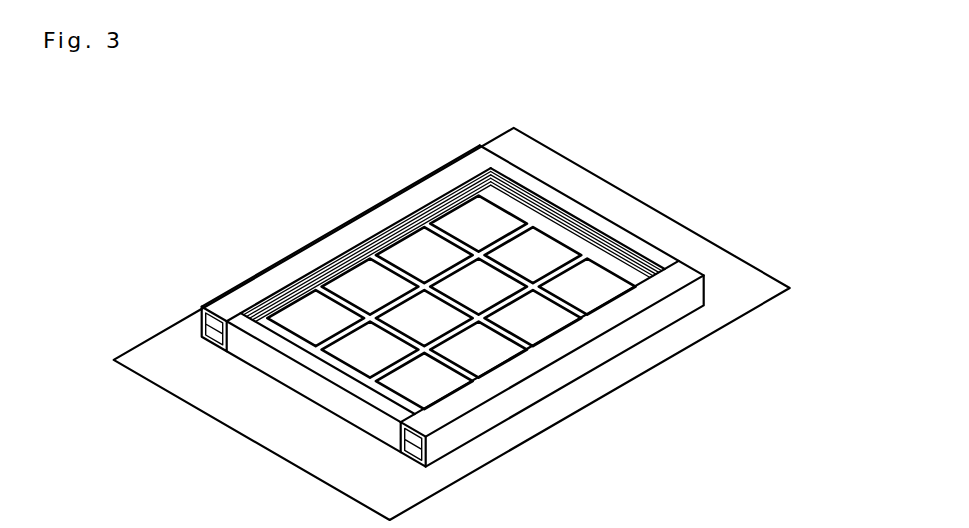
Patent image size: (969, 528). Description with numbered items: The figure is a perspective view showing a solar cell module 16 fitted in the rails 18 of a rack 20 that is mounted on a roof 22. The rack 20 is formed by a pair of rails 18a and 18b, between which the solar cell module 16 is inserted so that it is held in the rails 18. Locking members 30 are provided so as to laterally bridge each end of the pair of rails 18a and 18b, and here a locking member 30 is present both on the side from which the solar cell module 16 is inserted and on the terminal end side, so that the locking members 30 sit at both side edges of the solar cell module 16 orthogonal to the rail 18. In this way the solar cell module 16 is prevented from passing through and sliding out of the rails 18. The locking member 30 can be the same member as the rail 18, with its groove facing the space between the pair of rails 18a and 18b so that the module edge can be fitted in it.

The solar cell module 16 is at (422, 381).
The rails 18 is at (462, 306).
The rail 18a is at (288, 272).
The rail 18b is at (580, 363).
The rack 20 is at (471, 304).
The roof 22 is at (752, 296).
The locking member 30 is at (580, 217).